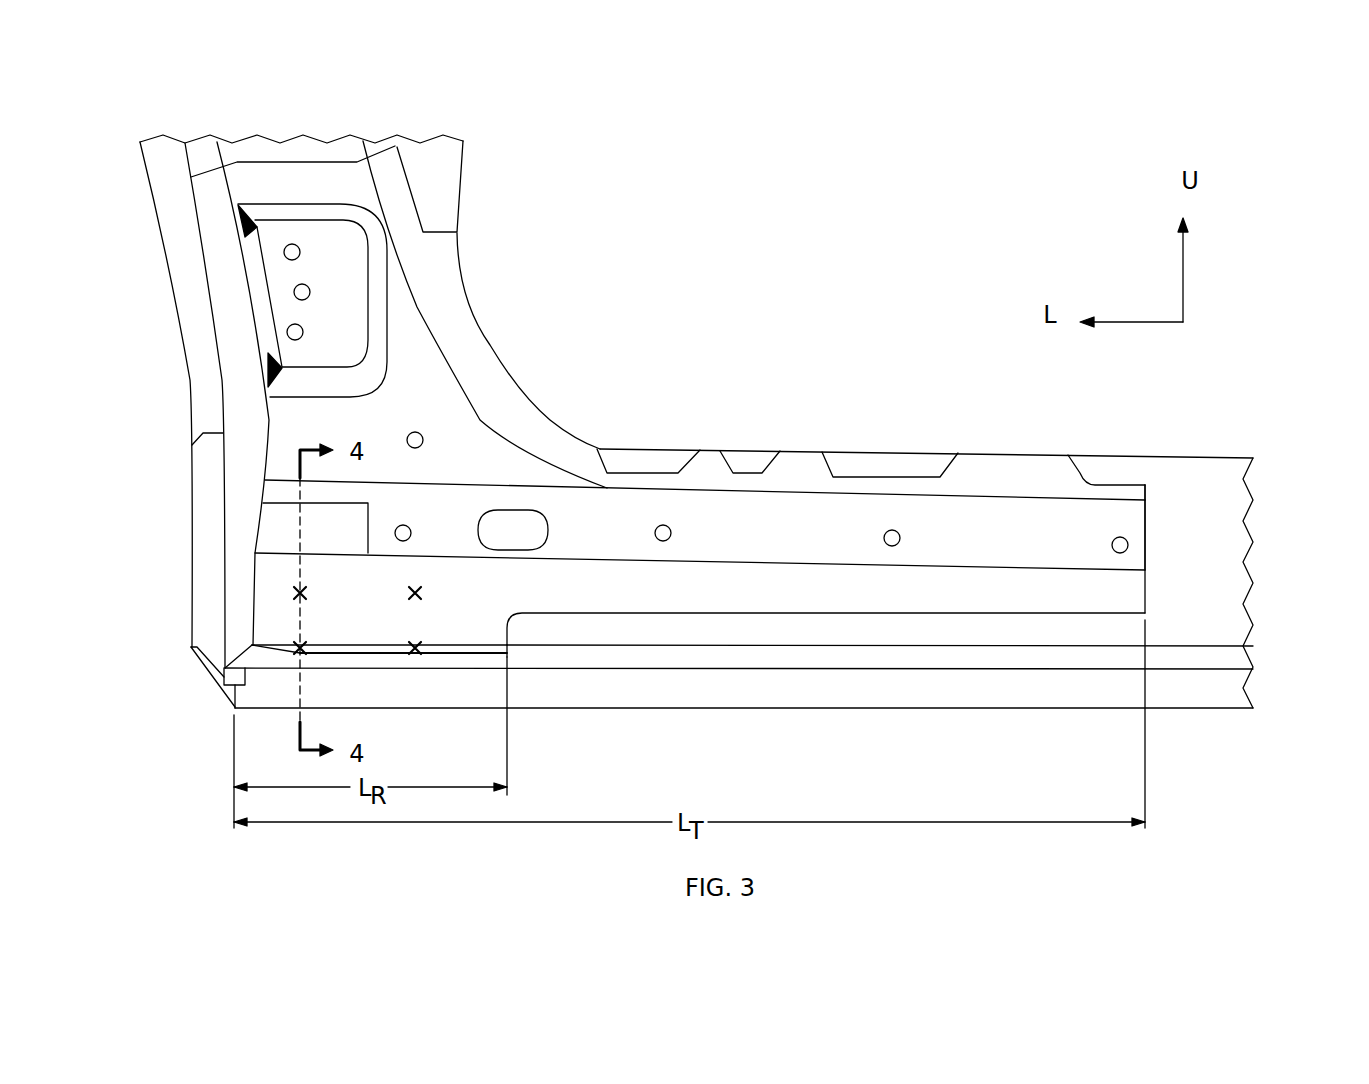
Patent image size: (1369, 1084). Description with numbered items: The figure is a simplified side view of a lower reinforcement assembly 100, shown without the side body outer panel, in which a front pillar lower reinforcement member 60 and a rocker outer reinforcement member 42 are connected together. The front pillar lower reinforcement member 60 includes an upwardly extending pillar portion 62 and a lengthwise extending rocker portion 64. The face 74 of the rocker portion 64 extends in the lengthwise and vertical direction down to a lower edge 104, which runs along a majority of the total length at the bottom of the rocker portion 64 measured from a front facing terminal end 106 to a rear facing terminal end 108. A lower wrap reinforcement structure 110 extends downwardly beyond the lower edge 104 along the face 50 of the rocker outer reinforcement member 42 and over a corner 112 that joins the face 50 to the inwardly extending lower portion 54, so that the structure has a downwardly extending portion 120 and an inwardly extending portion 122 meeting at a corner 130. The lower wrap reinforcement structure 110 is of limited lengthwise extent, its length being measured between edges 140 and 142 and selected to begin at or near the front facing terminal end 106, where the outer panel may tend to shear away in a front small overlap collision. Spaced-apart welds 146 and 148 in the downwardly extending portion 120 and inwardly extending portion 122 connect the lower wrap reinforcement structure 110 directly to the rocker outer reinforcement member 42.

The rocker outer reinforcement member 42 is at (1264, 621).
The face 50 is at (1133, 633).
The inwardly extending lower portion 54 is at (678, 660).
The front pillar lower reinforcement member 60 is at (460, 294).
The pillar portion 62 is at (158, 264).
The rocker portion 64 is at (818, 412).
The face 74 is at (780, 542).
The lower reinforcement assembly 100 is at (809, 214).
The lower edge 104 is at (935, 617).
The front facing terminal end 106 is at (243, 495).
The rear facing terminal end 108 is at (1147, 538).
The lower wrap reinforcement structure 110 is at (338, 628).
The corner 112 is at (610, 648).
The downwardly extending portion 120 is at (440, 627).
The inwardly extending portion 122 is at (378, 655).
The corner 130 is at (495, 650).
The edge 140 is at (253, 582).
The edge 142 is at (518, 636).
The weld 146 is at (307, 594).
The weld 148 is at (293, 655).